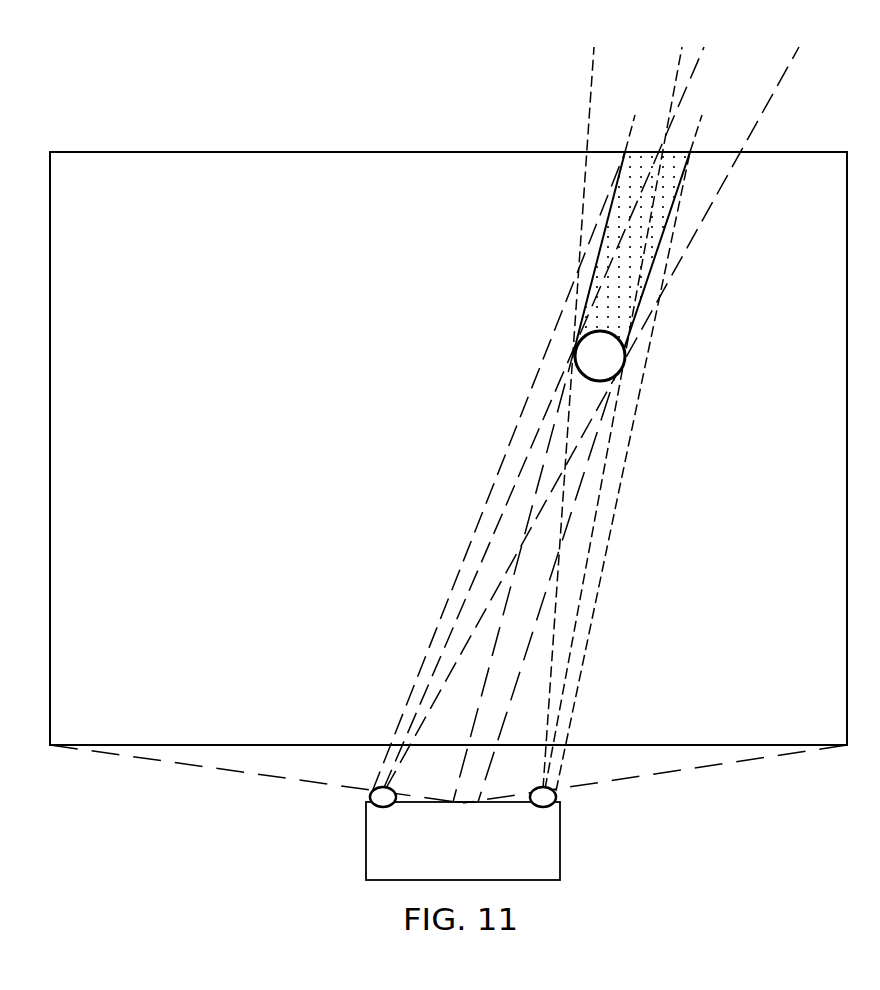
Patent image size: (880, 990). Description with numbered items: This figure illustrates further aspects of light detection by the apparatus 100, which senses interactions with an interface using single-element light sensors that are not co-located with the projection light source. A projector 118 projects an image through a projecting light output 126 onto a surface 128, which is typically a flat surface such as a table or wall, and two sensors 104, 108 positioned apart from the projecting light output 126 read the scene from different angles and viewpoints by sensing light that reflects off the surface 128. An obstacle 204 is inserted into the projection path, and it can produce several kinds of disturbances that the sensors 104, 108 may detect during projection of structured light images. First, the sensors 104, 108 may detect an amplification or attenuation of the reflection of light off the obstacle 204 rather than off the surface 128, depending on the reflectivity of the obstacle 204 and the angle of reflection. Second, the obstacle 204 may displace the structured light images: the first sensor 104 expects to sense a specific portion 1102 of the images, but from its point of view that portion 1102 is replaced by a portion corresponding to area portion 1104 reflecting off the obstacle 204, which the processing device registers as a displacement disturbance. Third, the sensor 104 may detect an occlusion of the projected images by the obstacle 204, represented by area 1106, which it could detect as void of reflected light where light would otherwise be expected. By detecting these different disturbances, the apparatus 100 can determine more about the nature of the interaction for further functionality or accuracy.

The apparatus 100 is at (364, 842).
The single-element light sensor 104 is at (385, 807).
The single-element light sensor 108 is at (542, 807).
The projector 118 is at (468, 803).
The projecting light output 126 is at (475, 782).
The surface 128 is at (711, 806).
The obstacle 204 is at (601, 332).
The portion of the structured light images 1102 is at (797, 44).
The area portion 1104 is at (705, 113).
The occlusion area 1106 is at (682, 44).